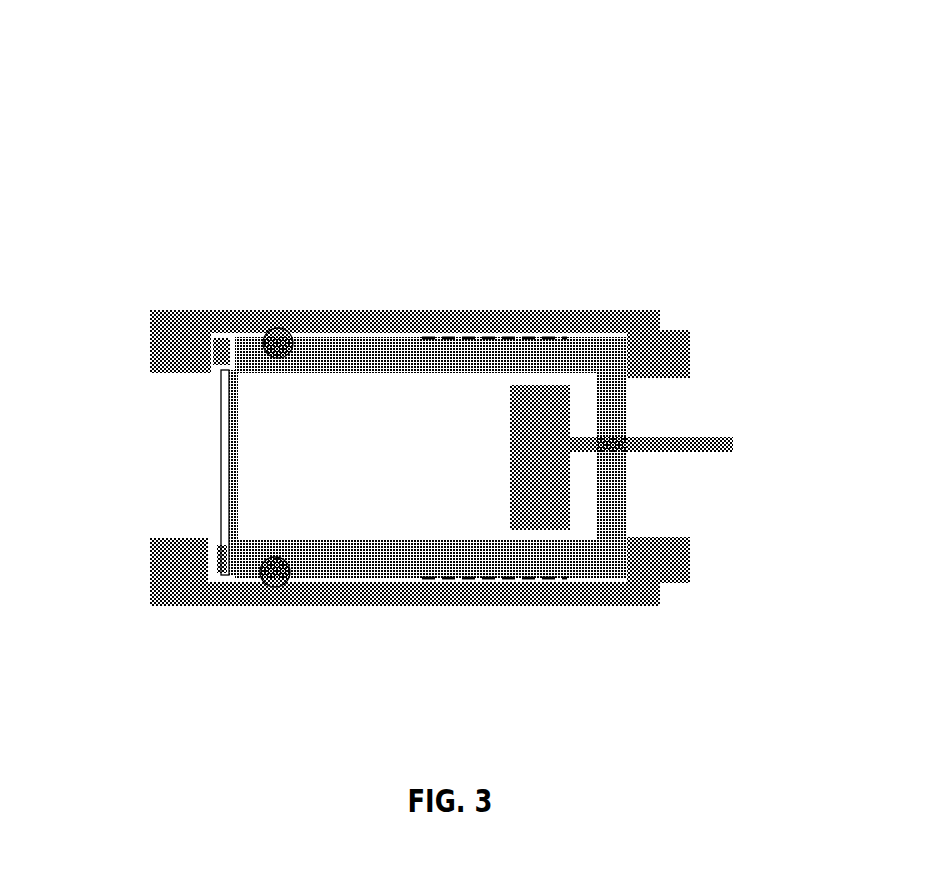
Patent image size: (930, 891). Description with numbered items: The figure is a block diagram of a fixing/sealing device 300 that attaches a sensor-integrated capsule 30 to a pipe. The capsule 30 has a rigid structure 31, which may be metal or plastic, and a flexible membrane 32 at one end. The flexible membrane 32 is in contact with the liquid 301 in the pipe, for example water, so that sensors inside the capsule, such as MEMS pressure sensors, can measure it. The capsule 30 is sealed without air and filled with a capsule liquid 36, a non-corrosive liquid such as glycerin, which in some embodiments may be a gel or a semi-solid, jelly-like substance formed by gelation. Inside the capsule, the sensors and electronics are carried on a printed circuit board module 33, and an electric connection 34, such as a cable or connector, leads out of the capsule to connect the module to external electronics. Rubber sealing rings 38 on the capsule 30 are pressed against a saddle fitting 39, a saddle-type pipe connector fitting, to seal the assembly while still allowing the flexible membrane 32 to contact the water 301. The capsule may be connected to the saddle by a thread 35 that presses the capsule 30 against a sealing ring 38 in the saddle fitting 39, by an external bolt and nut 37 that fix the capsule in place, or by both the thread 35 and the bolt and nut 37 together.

The fixing/sealing device 300 is at (190, 115).
The sensor-integrated capsule 30 is at (220, 457).
The liquid 301 is at (178, 433).
The rigid structure 31 is at (357, 352).
The flexible membrane 32 is at (238, 438).
The printed circuit board module 33 is at (510, 457).
The electric connection 34 is at (732, 438).
The thread 35 is at (500, 337).
The capsule liquid 36 is at (333, 500).
The external bolt and nut 37 is at (690, 558).
The rubber sealing rings 38 is at (278, 350).
The saddle fitting 39 is at (163, 355).